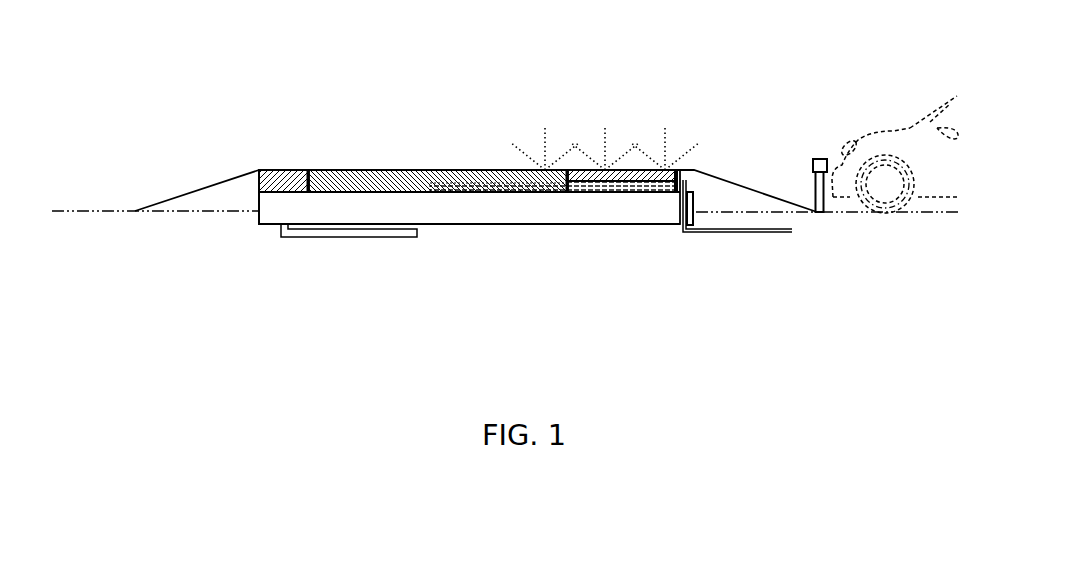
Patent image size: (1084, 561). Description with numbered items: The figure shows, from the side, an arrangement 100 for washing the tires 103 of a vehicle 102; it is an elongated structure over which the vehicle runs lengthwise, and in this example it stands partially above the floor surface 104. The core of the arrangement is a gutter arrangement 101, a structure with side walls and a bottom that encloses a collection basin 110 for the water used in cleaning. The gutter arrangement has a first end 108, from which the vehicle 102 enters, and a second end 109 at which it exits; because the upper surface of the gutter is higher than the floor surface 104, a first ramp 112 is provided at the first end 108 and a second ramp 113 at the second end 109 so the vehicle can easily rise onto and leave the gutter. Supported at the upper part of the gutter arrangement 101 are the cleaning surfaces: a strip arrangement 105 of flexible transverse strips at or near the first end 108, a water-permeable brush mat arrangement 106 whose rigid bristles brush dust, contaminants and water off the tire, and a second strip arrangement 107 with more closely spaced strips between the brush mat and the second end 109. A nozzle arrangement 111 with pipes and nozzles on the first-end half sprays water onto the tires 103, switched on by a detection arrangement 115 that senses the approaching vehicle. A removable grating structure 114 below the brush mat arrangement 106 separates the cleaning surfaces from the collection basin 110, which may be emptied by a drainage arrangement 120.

The arrangement 100 is at (82, 58).
The gutter arrangement 101 is at (480, 224).
The vehicle 102 is at (895, 130).
The tires 103 is at (892, 213).
The floor surface 104 is at (93, 212).
The strip arrangement 105 is at (620, 176).
The brush mat arrangement 106 is at (424, 170).
The second strip arrangement 107 is at (285, 170).
The first end of the gutter arrangement 108 is at (694, 212).
The second end of the gutter arrangement 109 is at (257, 212).
The collection basin 110 is at (430, 226).
The nozzle arrangement 111 is at (617, 193).
The first ramp 112 is at (753, 190).
The second ramp 113 is at (205, 186).
The grating structure 114 is at (522, 193).
The detection arrangement 115 is at (819, 159).
The drainage arrangement 120 is at (338, 236).